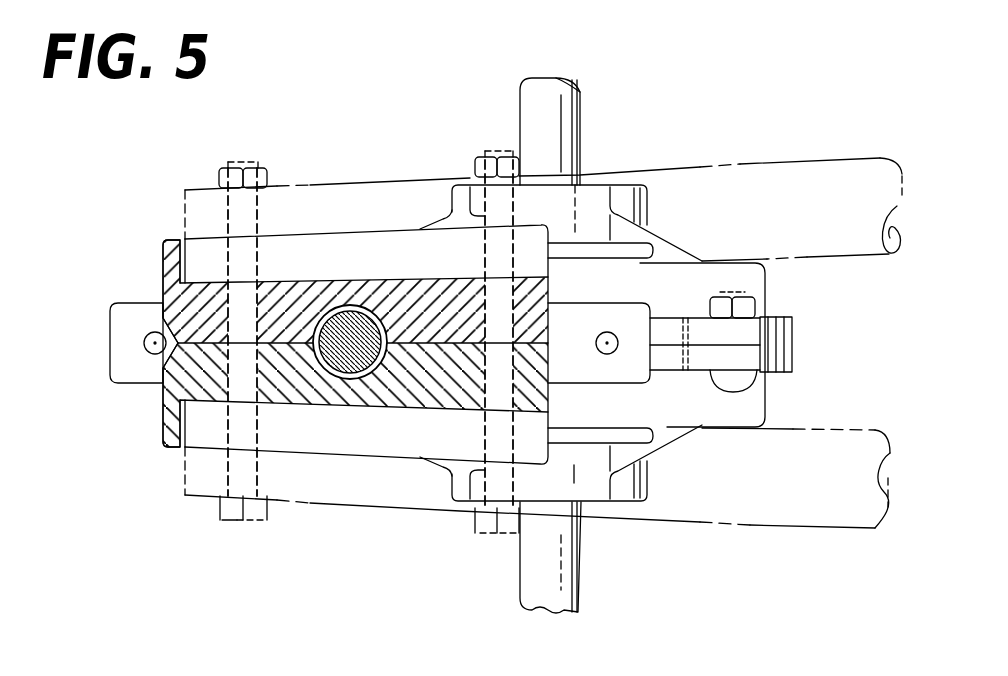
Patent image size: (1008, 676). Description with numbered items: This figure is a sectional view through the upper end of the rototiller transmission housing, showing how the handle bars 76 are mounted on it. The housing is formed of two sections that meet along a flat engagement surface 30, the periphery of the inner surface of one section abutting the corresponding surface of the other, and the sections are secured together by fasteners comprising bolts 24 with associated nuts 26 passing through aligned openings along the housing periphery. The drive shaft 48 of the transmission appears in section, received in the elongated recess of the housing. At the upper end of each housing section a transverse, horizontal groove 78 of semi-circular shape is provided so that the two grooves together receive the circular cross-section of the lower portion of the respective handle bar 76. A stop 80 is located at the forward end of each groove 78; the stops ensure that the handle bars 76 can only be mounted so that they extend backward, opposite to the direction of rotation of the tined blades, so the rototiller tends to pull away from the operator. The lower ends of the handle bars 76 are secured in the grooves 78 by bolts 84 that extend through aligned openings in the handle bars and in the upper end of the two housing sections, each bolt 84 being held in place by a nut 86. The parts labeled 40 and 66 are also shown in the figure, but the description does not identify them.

The bolts 24 is at (748, 378).
The nuts 26 is at (757, 307).
The flat engagement surface 30 is at (778, 352).
The vertical post 40 is at (563, 138).
The drive shaft 48 is at (325, 358).
The bracket 66 is at (622, 188).
The handle bars 76 is at (778, 168).
The transverse groove 78 is at (320, 283).
The stop 80 is at (163, 240).
The bolts 84 is at (240, 510).
The nuts 86 is at (263, 177).